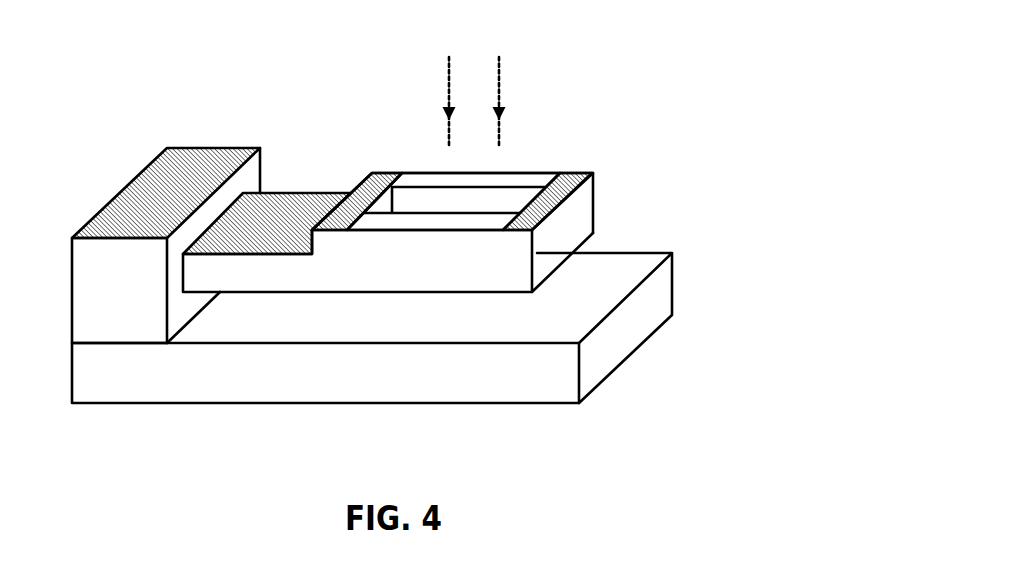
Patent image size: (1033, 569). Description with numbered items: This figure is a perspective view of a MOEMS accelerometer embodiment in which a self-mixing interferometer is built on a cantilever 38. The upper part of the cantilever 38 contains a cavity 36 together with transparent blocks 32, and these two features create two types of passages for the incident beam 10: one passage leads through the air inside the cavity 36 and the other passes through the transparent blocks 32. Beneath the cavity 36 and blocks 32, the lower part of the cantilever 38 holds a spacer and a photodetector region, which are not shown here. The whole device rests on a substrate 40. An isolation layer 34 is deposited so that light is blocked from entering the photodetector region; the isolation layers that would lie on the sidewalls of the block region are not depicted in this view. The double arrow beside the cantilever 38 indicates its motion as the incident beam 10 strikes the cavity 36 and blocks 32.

The incident beam 10 is at (494, 74).
The transparent blocks 32 is at (459, 150).
The isolation layer 34 is at (158, 190).
The cavity 36 is at (415, 198).
The cantilever 38 is at (613, 186).
The substrate 40 is at (372, 328).